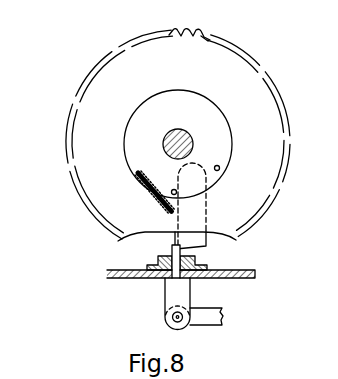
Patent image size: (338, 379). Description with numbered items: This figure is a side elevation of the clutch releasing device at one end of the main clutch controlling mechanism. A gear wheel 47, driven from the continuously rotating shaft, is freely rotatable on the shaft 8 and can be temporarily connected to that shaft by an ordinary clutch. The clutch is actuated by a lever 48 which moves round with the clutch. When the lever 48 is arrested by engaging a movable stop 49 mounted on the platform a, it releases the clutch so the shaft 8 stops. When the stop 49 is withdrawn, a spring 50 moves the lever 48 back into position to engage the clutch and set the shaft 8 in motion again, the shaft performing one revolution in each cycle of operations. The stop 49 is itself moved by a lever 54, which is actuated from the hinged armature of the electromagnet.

The gear wheel 47 is at (205, 37).
The shaft 8 is at (191, 137).
The spring 50 is at (160, 203).
The movable stop 49 is at (162, 252).
The lever 48 is at (206, 246).
The platform a is at (109, 279).
The lever 54 is at (212, 320).